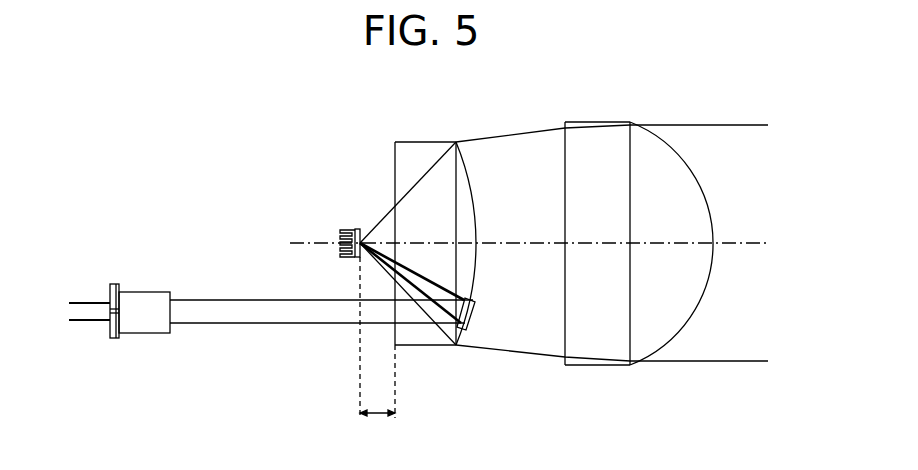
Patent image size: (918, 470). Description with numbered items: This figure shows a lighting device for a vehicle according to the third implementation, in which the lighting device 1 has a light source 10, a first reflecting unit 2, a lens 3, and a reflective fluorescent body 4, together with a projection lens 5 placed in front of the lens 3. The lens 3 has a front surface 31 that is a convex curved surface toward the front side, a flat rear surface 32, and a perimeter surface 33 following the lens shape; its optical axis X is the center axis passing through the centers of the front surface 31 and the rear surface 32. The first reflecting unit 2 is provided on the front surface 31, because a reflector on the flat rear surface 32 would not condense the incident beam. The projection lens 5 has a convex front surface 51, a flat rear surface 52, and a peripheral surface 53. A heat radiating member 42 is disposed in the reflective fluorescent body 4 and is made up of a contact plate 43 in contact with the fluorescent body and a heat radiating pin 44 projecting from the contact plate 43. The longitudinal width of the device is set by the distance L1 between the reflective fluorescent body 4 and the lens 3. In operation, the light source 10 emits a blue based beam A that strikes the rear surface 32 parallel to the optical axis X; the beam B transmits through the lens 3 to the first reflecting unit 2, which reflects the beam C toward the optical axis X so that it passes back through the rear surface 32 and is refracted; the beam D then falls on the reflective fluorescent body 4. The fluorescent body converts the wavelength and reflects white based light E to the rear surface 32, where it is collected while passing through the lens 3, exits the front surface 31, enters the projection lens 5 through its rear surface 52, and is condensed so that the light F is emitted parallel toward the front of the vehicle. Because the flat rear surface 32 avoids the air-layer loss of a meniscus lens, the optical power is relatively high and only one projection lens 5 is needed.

The lighting device 1 is at (110, 347).
The light source 10 is at (155, 330).
The blue based beam A is at (283, 318).
The first reflecting unit 2 is at (476, 312).
The lens 3 is at (432, 237).
The front surface 31 is at (468, 180).
The rear surface 32 is at (395, 157).
The perimeter surface 33 is at (422, 142).
The reflective fluorescent body 4 is at (337, 212).
The heat radiating member 42 is at (333, 212).
The contact plate 43 is at (318, 192).
The heat radiating pin 44 is at (340, 233).
The projection lens 5 is at (619, 238).
The front surface 51 is at (672, 143).
The rear surface 52 is at (565, 147).
The peripheral surface 53 is at (597, 121).
The beam incident on the rear surface of the lens B is at (415, 318).
The beam reflected from the first reflecting unit C is at (407, 291).
The beam transmitted through the rear surface of the lens D is at (383, 268).
The white based light E is at (383, 212).
The light irradiated to the front side F is at (734, 125).
The optical axis X is at (538, 244).
The distance between the reflective fluorescent body and lens L1 is at (377, 350).